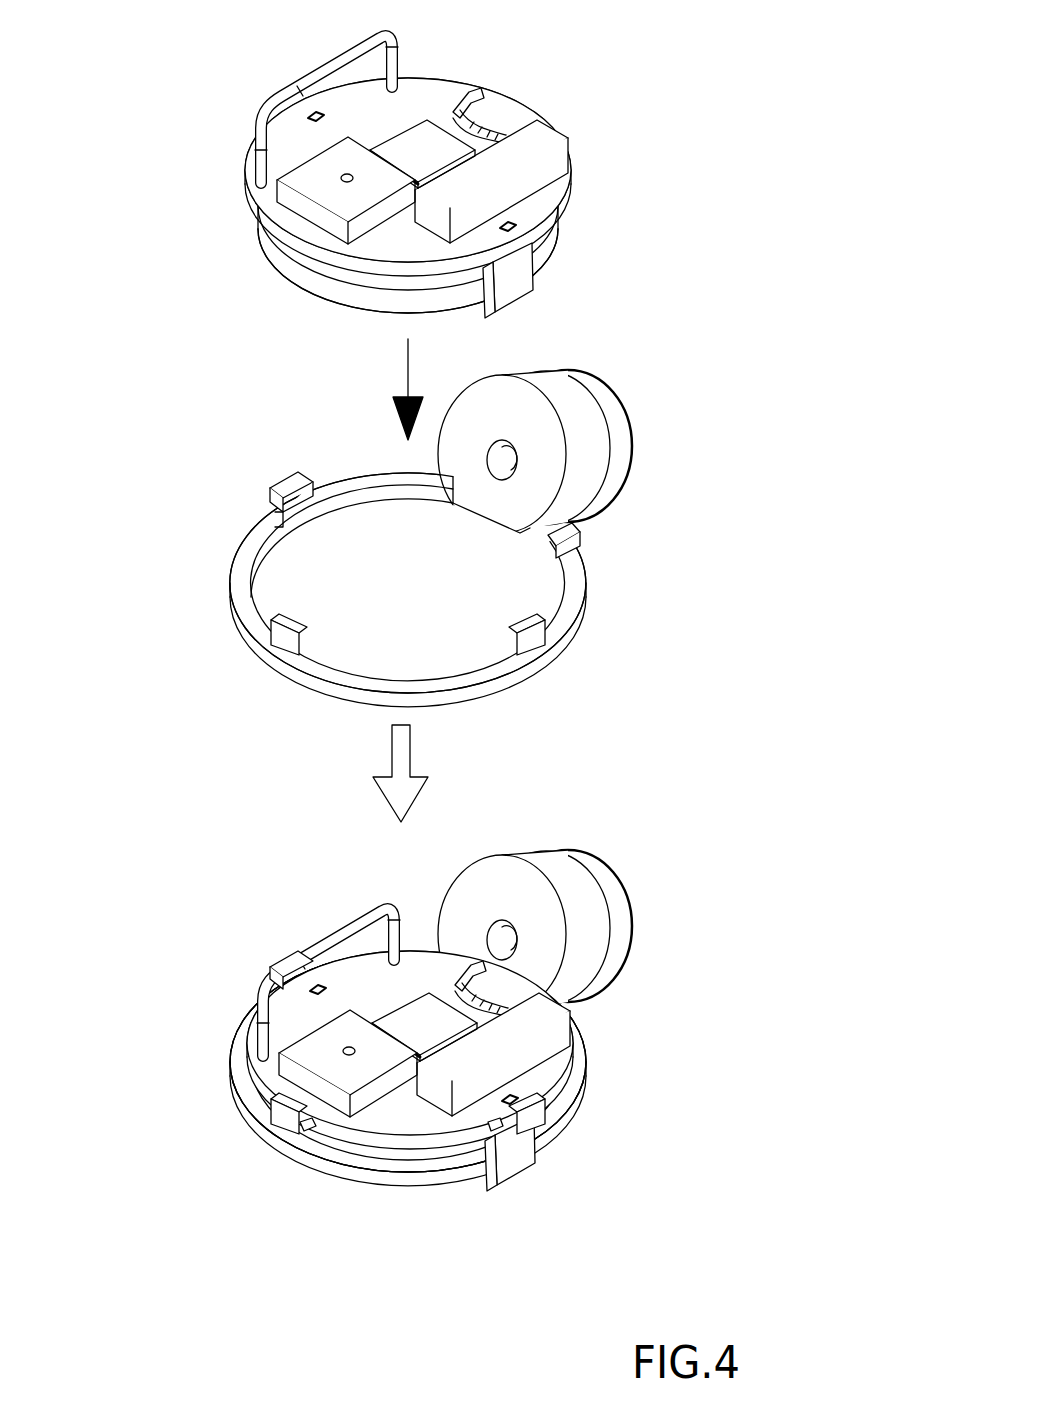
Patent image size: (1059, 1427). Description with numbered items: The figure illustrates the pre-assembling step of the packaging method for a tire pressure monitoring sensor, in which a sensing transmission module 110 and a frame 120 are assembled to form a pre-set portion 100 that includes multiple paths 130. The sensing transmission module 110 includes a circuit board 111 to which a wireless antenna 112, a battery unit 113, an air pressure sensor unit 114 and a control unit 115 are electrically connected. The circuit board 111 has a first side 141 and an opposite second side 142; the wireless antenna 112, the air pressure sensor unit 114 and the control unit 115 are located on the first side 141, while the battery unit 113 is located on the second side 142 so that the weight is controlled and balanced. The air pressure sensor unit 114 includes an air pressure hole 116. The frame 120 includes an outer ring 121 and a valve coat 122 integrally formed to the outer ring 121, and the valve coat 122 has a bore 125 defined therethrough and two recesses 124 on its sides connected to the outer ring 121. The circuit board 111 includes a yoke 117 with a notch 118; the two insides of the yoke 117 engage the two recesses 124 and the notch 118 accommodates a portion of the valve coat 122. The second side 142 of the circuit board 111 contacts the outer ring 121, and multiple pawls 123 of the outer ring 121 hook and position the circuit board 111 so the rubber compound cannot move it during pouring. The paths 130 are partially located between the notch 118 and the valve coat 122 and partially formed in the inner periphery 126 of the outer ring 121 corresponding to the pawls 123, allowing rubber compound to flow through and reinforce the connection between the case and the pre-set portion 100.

The pre-set portion 100 is at (228, 1203).
The sensing transmission module 110 is at (192, 222).
The circuit board 111 is at (545, 252).
The wireless antenna 112 is at (308, 83).
The battery unit 113 is at (312, 275).
The air pressure sensor unit 114 is at (283, 195).
The control unit 115 is at (418, 135).
The air pressure hole 116 is at (345, 182).
The yoke 117 is at (472, 88).
The notch 118 is at (492, 124).
The frame 120 is at (223, 575).
The outer ring 121 is at (245, 542).
The valve coat 122 is at (593, 422).
The pawls 123 is at (287, 485).
The recesses 124 is at (452, 503).
The bore 125 is at (512, 477).
The inner periphery 126 is at (354, 503).
The paths 130 is at (313, 1128).
The first side 141 is at (548, 205).
The second side 142 is at (530, 235).